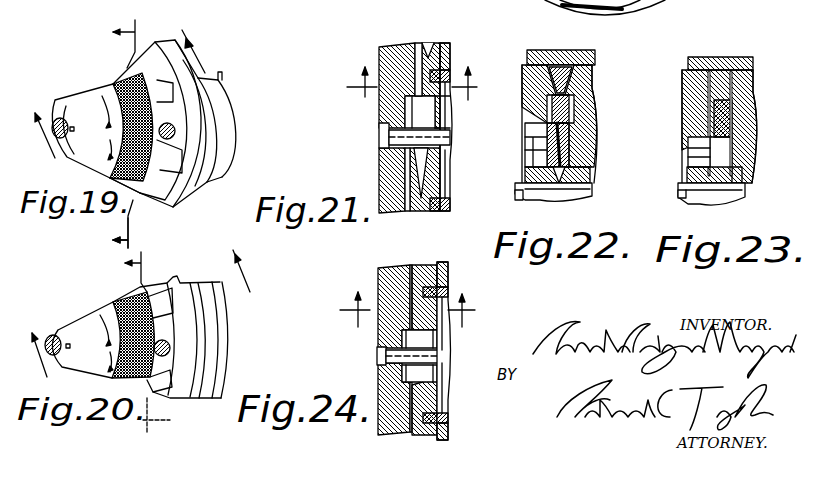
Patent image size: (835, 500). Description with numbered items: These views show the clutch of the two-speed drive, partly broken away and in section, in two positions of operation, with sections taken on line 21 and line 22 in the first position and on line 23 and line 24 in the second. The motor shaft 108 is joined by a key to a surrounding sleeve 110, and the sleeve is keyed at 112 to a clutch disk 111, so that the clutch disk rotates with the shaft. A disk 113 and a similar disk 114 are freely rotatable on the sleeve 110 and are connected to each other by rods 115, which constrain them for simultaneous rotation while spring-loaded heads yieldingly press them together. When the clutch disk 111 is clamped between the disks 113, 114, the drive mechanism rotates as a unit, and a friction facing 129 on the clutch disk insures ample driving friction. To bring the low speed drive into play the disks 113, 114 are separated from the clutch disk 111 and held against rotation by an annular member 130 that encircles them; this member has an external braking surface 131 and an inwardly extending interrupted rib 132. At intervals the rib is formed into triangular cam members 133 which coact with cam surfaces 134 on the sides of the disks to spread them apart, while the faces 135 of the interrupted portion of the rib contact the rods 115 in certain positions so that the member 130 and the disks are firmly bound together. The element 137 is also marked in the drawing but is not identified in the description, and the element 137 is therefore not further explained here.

In FIG. 22, the shaft 108 is at (515, 192).
In FIG. 23, the shaft 108 is at (678, 190).
In FIG. 19, the sleeve 110 is at (60, 100).
In FIG. 20, the sleeve 110 is at (55, 330).
In FIG. 22, the sleeve 110 is at (590, 194).
In FIG. 23, the sleeve 110 is at (737, 198).
In FIG. 19, the clutch disk 111 is at (97, 100).
In FIG. 22, the clutch disk 111 is at (588, 143).
In FIG. 23, the clutch disk 111 is at (743, 147).
In FIG. 19, the key 112 is at (228, 2).
In FIG. 21, the disk 113 is at (440, 184).
In FIG. 22, the disk 113 is at (588, 100).
In FIG. 23, the disk 113 is at (750, 97).
In FIG. 24, the disk 113 is at (440, 281).
In FIG. 19, the disk 114 is at (175, 205).
In FIG. 20, the disk 114 is at (120, 298).
In FIG. 21, the disk 114 is at (380, 167).
In FIG. 22, the disk 114 is at (533, 83).
In FIG. 23, the disk 114 is at (690, 90).
In FIG. 24, the disk 114 is at (383, 388).
In FIG. 19, the rods 115 is at (175, 130).
In FIG. 20, the rods 115 is at (170, 348).
In FIG. 21, the rods 115 is at (450, 145).
In FIG. 24, the rods 115 is at (378, 355).
In FIG. 19, the friction facing 129 is at (148, 115).
In FIG. 20, the friction facing 129 is at (110, 333).
In FIG. 21, the friction facing 129 is at (450, 128).
In FIG. 22, the friction facing 129 is at (590, 112).
In FIG. 23, the friction facing 129 is at (753, 111).
In FIG. 19, the annular member 130 is at (205, 182).
In FIG. 20, the annular member 130 is at (228, 306).
In FIG. 22, the annular member 130 is at (593, 63).
In FIG. 23, the annular member 130 is at (754, 63).
In FIG. 22, the external braking surface 131 is at (567, 52).
In FIG. 23, the external braking surface 131 is at (723, 55).
In FIG. 21, the interrupted rib 132 is at (423, 46).
In FIG. 24, the interrupted rib 132 is at (413, 440).
In FIG. 19, the triangular cam members 133 is at (182, 160).
In FIG. 20, the triangular cam members 133 is at (185, 283).
In FIG. 21, the triangular cam members 133 is at (415, 78).
In FIG. 21, the cam surfaces 134 is at (407, 99).
In FIG. 24, the cam surfaces 134 is at (373, 297).
In FIG. 21, the faces 135 is at (442, 112).
In FIG. 24, the faces 135 is at (415, 331).
In FIG. 19, the collar 137 is at (197, 110).
In FIG. 20, the collar 137 is at (220, 330).
In FIG. 19, the section line 21— 21 is at (138, 133).
In FIG. 20, the section line 21— 21 is at (133, 233).
In FIG. 19, the section line 22— 22 is at (118, 97).
In FIG. 21, the section line 22— 22 is at (411, 89).
In FIG. 20, the section line 23— 23 is at (139, 313).
In FIG. 24, the section line 23— 23 is at (406, 313).
In FIG. 20, the section line 24— 24 is at (147, 341).